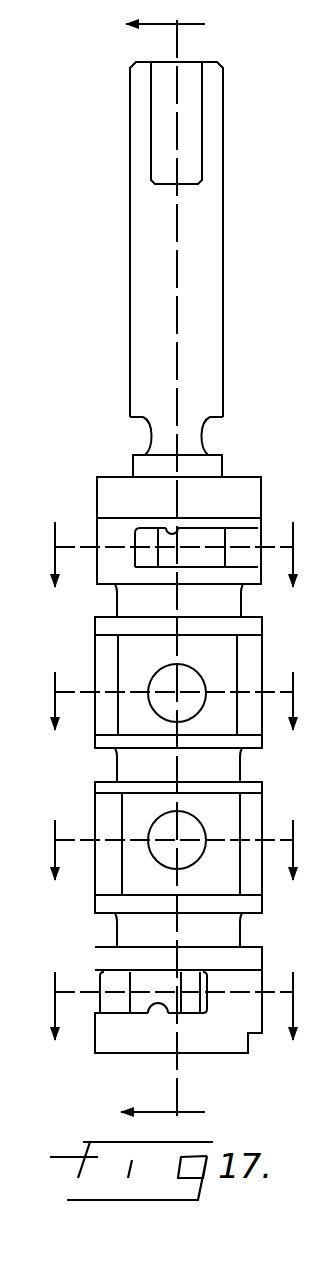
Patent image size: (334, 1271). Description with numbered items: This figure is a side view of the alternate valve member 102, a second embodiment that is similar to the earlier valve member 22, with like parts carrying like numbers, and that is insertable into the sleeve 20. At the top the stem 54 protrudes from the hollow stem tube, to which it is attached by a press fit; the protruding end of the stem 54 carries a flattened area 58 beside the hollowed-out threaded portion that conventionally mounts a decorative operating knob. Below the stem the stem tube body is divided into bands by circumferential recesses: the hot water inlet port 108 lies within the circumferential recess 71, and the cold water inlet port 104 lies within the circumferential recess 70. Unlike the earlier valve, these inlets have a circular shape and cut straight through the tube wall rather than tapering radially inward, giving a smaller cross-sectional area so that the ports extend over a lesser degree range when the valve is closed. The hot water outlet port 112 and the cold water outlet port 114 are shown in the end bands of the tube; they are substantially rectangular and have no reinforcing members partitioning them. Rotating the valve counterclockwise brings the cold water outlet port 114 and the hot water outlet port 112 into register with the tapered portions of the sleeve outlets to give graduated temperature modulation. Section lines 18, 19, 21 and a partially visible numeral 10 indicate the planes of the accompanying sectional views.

The section line 18- 18 is at (183, 571).
The section line 19- 19 is at (175, 535).
The sleeve 20 is at (178, 683).
The section line 21- 21 is at (173, 832).
The valve member 22 is at (176, 988).
The stem 54 is at (210, 280).
The flattened area 58 is at (162, 127).
The alternate valve member 102 is at (260, 476).
The hot water outlet port 112 is at (165, 532).
The partial numeral (cut off) 10 is at (253, 500).
The circumferential recess 71 is at (132, 660).
The hot water inlet port 108 is at (199, 682).
The circumferential recess 70 is at (227, 872).
The cold water inlet port 104 is at (155, 855).
The cold water outlet port 114 is at (158, 1006).